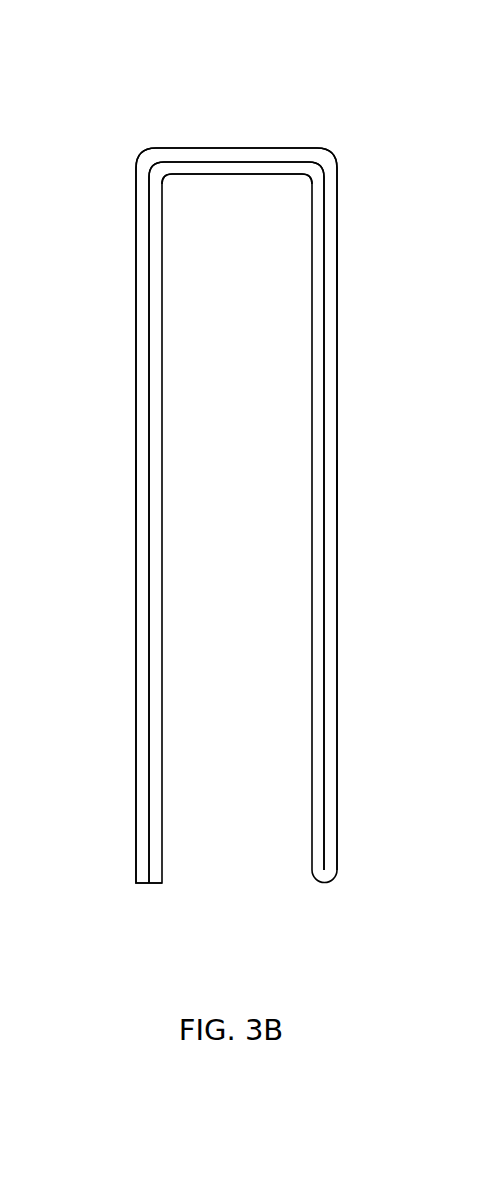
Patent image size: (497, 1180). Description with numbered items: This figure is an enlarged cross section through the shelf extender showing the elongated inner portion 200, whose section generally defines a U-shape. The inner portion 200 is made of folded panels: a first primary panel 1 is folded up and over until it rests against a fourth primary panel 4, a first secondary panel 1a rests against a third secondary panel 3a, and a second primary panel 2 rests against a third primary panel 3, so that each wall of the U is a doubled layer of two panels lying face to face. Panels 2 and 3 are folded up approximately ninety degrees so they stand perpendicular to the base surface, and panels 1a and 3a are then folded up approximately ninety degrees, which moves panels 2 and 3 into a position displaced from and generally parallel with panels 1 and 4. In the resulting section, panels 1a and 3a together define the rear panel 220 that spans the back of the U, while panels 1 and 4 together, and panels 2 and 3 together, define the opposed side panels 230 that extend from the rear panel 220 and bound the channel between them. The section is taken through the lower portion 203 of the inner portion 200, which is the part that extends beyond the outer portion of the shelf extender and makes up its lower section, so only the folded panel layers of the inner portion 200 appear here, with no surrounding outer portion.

The inner portion 200 is at (334, 81).
The rear panel 220 is at (188, 148).
The opposed side panels 230 is at (137, 490).
The lower portion 203 is at (337, 260).
The first primary panel 1 is at (148, 630).
The first secondary panel 1a is at (217, 162).
The second primary panel 2 is at (324, 360).
The third primary panel 3 is at (337, 308).
The third secondary panel 3a is at (253, 148).
The fourth primary panel 4 is at (136, 587).